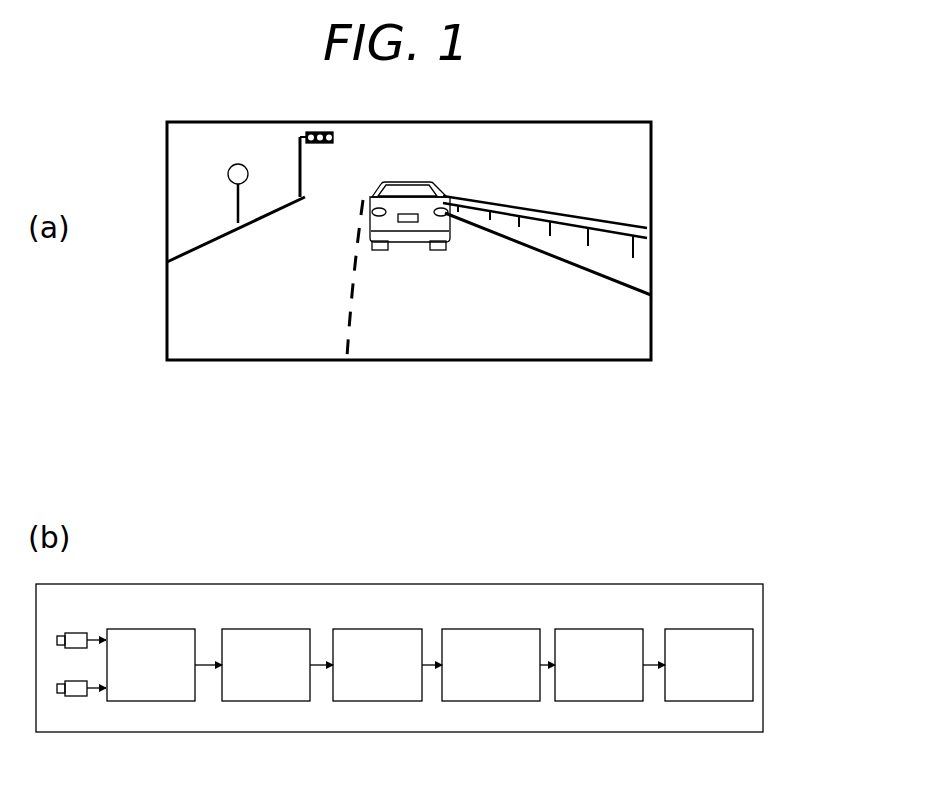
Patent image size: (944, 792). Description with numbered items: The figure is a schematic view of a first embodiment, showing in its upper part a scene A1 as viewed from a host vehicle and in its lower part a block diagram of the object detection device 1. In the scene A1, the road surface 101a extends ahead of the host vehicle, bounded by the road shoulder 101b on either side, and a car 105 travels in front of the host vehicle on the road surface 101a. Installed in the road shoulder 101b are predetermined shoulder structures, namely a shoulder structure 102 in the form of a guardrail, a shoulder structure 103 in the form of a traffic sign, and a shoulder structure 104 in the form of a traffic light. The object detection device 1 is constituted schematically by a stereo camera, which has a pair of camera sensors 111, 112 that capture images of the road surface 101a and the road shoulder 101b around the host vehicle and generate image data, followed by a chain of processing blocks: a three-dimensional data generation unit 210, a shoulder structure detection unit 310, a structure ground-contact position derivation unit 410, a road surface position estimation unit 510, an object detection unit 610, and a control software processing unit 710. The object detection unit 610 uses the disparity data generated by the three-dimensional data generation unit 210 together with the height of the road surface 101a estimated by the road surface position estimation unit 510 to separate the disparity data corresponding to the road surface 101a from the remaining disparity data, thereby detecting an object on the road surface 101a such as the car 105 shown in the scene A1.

The scene A1 is at (421, 121).
The road surface 101a is at (267, 325).
The road shoulder 101b is at (218, 232).
The shoulder structure (guardrail) 102 is at (574, 217).
The shoulder structure (traffic sign) 103 is at (235, 164).
The shoulder structure (traffic light) 104 is at (334, 142).
The car 105 is at (418, 180).
The object detection device 1 is at (140, 583).
The camera sensor 111 is at (73, 632).
The camera sensor 112 is at (75, 698).
The three-dimensional data generation unit 210 is at (149, 628).
The shoulder structure detection unit 310 is at (267, 628).
The structure ground-contact position derivation unit 410 is at (378, 629).
The road surface position estimation unit 510 is at (490, 629).
The object detection unit 610 is at (600, 629).
The control software processing unit 710 is at (724, 616).